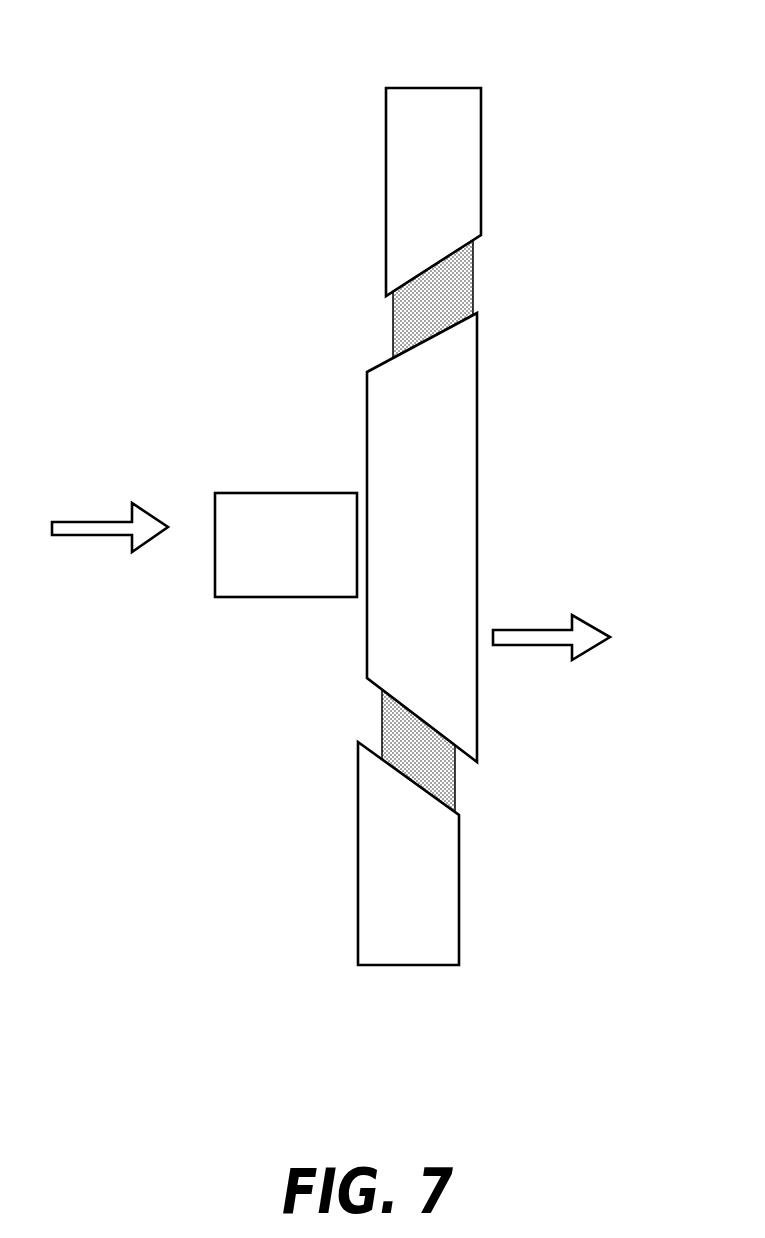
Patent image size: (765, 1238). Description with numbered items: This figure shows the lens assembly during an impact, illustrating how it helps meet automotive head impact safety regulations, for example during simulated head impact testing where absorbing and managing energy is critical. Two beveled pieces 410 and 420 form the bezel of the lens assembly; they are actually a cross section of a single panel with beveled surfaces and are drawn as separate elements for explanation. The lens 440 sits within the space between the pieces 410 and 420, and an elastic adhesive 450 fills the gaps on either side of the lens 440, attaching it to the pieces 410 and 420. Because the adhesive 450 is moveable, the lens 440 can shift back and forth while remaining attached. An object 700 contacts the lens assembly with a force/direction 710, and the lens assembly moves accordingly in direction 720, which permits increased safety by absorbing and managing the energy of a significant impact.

The piece 410 is at (445, 88).
The piece 420 is at (459, 867).
The lens 440 is at (477, 538).
The elastic adhesive 450 is at (473, 273).
The object 700 is at (287, 493).
The force/direction 710 is at (88, 535).
The direction 720 is at (587, 622).